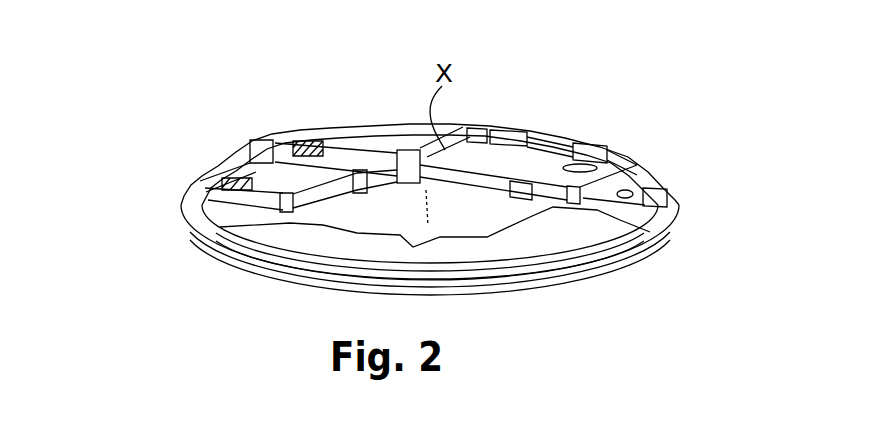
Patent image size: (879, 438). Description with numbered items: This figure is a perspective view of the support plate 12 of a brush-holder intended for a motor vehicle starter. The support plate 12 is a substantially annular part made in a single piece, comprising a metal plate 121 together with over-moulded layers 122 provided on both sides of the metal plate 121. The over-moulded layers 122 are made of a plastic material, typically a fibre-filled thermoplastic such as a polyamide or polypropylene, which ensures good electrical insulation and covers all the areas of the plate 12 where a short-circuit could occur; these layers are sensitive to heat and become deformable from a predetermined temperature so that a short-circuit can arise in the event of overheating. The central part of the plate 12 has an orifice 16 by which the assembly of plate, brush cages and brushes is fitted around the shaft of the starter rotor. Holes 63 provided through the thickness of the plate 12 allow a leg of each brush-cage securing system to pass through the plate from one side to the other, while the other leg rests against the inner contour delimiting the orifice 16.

The support plate 12 is at (484, 82).
The orifice 16 is at (377, 194).
The hole 63 is at (222, 167).
The metal plate 121 is at (193, 212).
The over-moulded layers 122 is at (677, 218).